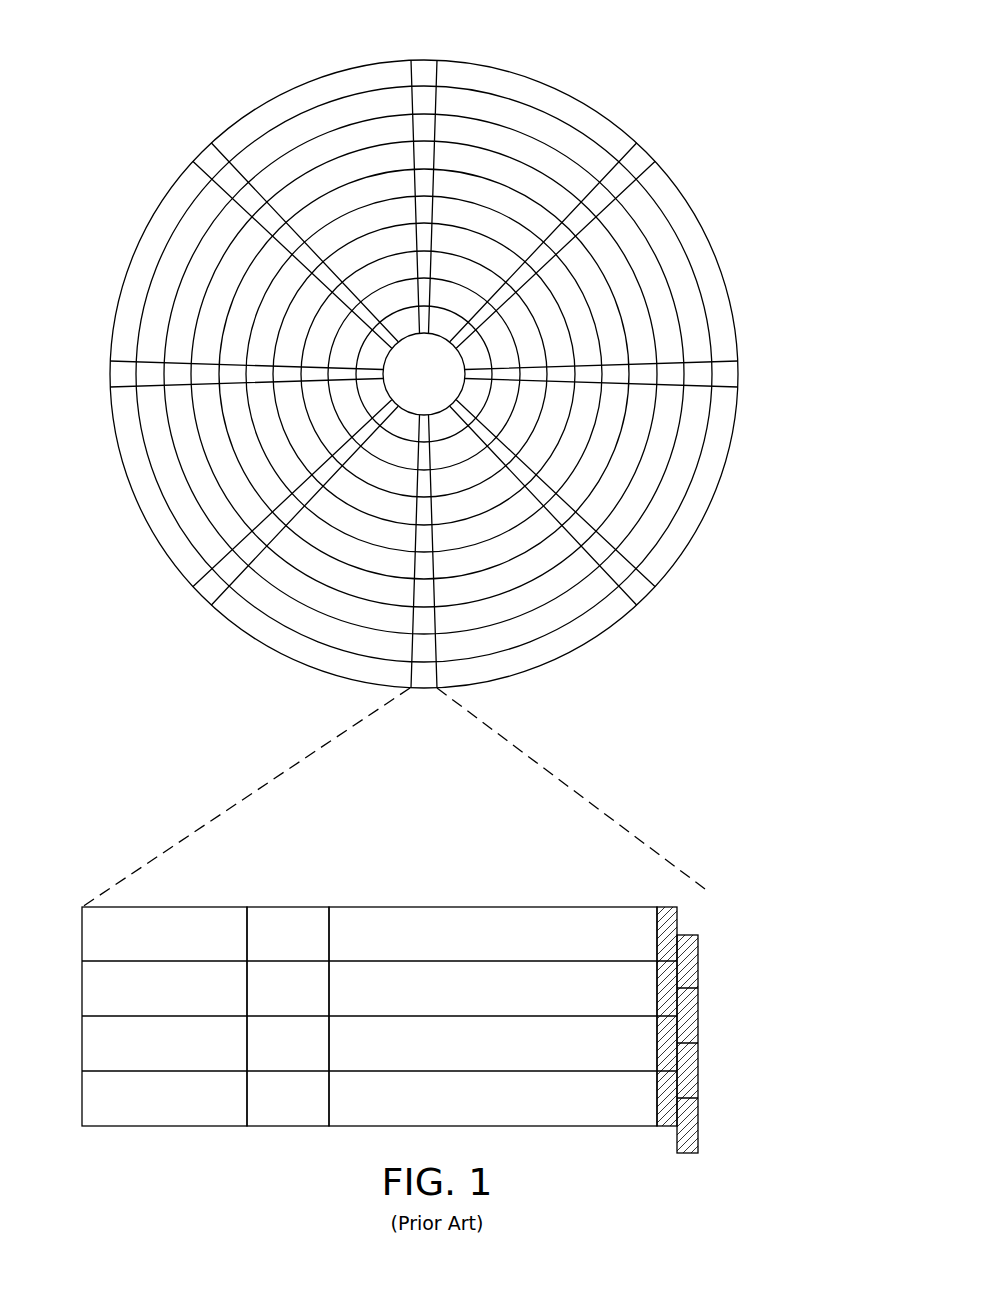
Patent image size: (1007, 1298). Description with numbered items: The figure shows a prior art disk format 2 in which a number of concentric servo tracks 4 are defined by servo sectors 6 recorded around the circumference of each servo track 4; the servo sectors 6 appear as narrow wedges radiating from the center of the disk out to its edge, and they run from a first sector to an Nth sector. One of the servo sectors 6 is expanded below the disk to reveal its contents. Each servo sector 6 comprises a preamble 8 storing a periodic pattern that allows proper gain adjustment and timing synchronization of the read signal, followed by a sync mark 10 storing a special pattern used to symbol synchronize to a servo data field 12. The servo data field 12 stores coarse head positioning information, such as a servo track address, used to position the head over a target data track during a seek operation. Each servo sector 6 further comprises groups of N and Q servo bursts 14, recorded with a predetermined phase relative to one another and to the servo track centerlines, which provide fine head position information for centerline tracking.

The disk format 2 is at (423, 383).
The servo tracks 4 is at (531, 122).
The servo sectors 6 is at (423, 383).
The preamble 8 is at (171, 906).
The sync mark 10 is at (291, 906).
The servo data field 12 is at (484, 906).
The servo bursts 14 is at (696, 905).